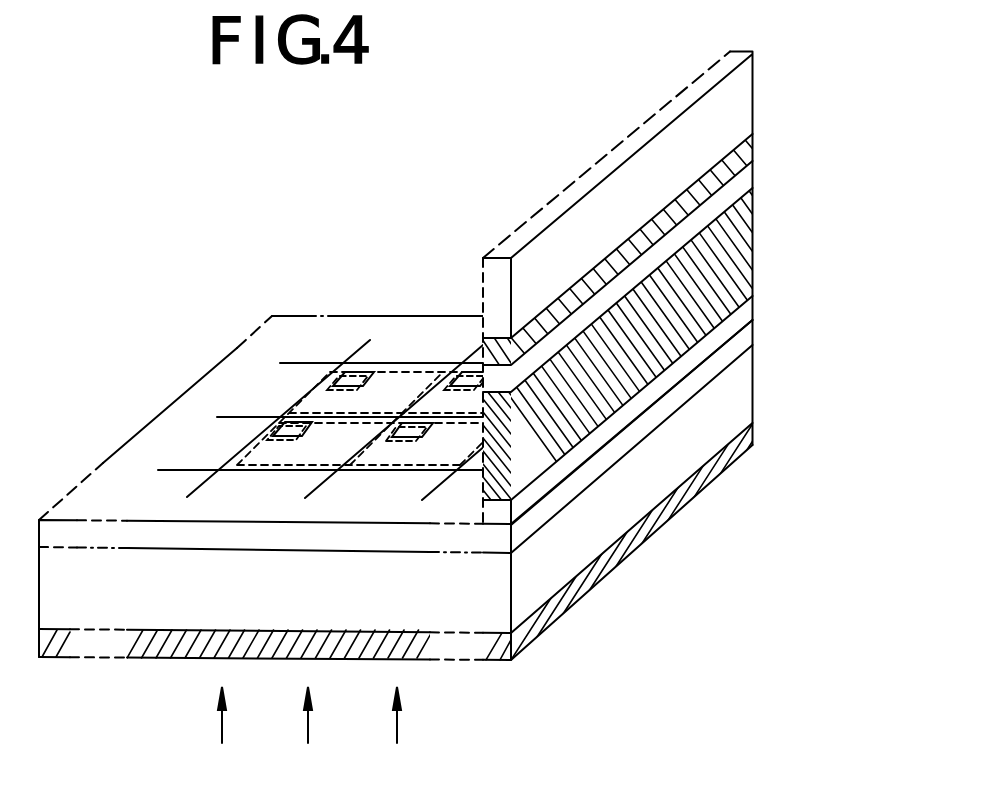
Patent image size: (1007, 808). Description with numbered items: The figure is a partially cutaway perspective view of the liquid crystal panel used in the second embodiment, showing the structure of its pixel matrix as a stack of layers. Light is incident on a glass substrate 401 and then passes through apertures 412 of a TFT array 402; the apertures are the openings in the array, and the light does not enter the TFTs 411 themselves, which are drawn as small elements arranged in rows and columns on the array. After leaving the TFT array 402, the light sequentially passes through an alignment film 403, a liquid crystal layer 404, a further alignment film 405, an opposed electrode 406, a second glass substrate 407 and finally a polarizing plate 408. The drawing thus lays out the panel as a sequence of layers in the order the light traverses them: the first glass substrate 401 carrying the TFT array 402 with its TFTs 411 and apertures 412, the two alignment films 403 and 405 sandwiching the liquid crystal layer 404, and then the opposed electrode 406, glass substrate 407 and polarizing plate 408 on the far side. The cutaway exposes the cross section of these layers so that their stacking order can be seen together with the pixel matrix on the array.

The glass substrate 401 is at (558, 553).
The TFT array 402 is at (630, 439).
The alignment film 403 is at (707, 342).
The liquid crystal layer 404 is at (684, 298).
The alignment film 405 is at (582, 320).
The opposed electrode 406 is at (670, 217).
The glass substrate 407 is at (738, 120).
The polarizing plate 408 is at (525, 636).
The TFTs 411 is at (358, 371).
The apertures 412 is at (332, 402).